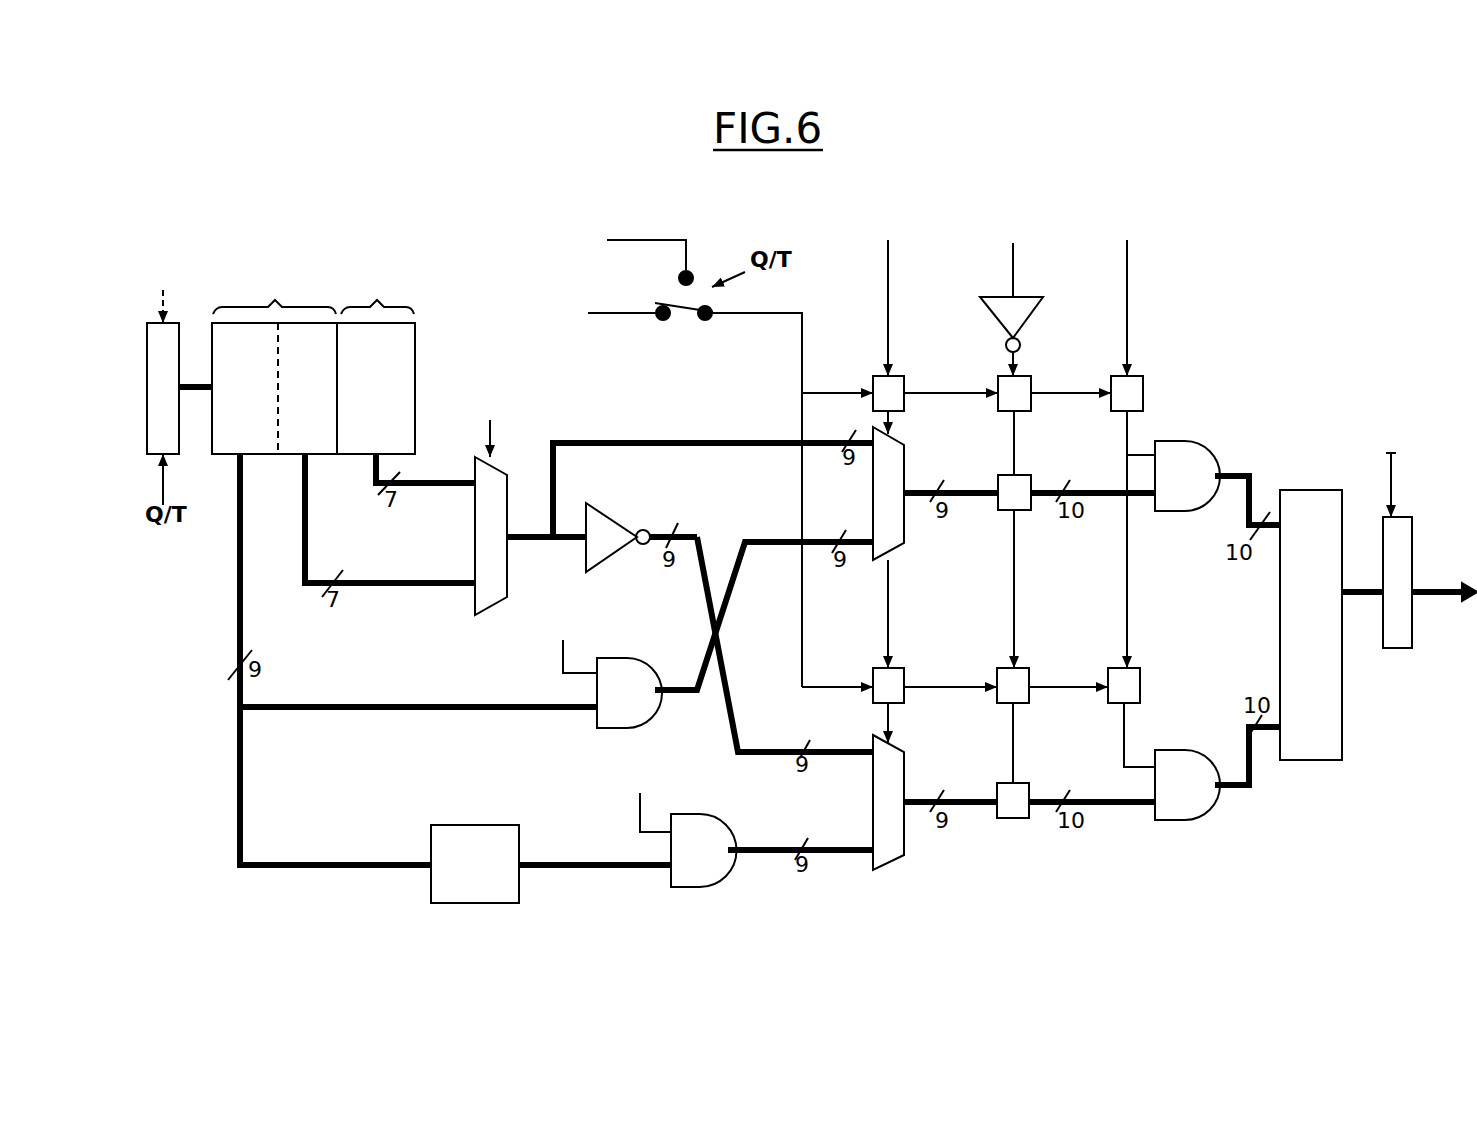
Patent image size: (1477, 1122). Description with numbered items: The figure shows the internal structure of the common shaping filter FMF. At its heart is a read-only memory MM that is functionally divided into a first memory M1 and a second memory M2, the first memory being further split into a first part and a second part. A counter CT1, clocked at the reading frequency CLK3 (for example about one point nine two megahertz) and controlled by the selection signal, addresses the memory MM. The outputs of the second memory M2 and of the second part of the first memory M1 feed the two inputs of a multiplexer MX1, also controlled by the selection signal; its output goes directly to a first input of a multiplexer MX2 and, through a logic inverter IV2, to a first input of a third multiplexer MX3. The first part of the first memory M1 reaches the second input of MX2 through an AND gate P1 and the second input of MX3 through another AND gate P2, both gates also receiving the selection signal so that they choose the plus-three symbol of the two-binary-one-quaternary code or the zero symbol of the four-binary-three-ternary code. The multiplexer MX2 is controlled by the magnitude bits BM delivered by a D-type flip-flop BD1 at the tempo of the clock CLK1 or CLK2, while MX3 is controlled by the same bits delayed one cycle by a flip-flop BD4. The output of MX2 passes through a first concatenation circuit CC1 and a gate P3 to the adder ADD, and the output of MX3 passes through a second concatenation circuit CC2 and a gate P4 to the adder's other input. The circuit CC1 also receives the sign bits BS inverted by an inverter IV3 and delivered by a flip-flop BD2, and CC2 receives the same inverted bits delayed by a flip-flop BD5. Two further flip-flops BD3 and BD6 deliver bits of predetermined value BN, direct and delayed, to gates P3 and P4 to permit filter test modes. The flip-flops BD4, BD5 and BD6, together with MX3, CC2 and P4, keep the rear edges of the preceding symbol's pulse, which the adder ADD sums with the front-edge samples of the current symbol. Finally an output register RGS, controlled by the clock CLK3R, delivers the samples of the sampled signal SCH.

The read-only memory MM is at (335, 257).
The first memory M1 is at (274, 289).
The second memory M2 is at (377, 289).
The counter CT1 is at (180, 445).
The reading frequency clock signal CLK3 is at (165, 293).
The clock signal CLK3 controlling output register CLK3R is at (1388, 472).
The first clock signal CLK1 is at (662, 492).
The second clock signal CLK2 is at (614, 256).
The multiplexer MX1 is at (475, 552).
The multiplexer MX2 is at (904, 466).
The third multiplexer MX3 is at (904, 775).
The logic inverter IV2 is at (612, 514).
The inverter IV3 is at (1030, 297).
The AND logic gate P1 is at (602, 671).
The AND logic gate P2 is at (677, 827).
The logic gate P3 is at (1187, 476).
The logic gate P4 is at (1187, 785).
The D-type flip-flop BD1 is at (900, 376).
The D flip-flop BD2 is at (1027, 376).
The D-type flip-flop BD3 is at (1139, 376).
The D-type flip-flop BD4 is at (898, 668).
The D flip-flop BD5 is at (1028, 668).
The D-type flip-flop BD6 is at (1138, 668).
The first concatenation circuit CC1 is at (1026, 475).
The second concatenation circuit CC2 is at (1024, 783).
The adder ADD is at (1311, 625).
The output register RGS is at (1403, 650).
The sampled signal SCH is at (1428, 597).
The shaping filter FMF is at (1187, 243).
The magnitude bits BM is at (885, 295).
The sign bits BS is at (1010, 256).
The bits of predetermined value BN is at (1126, 295).